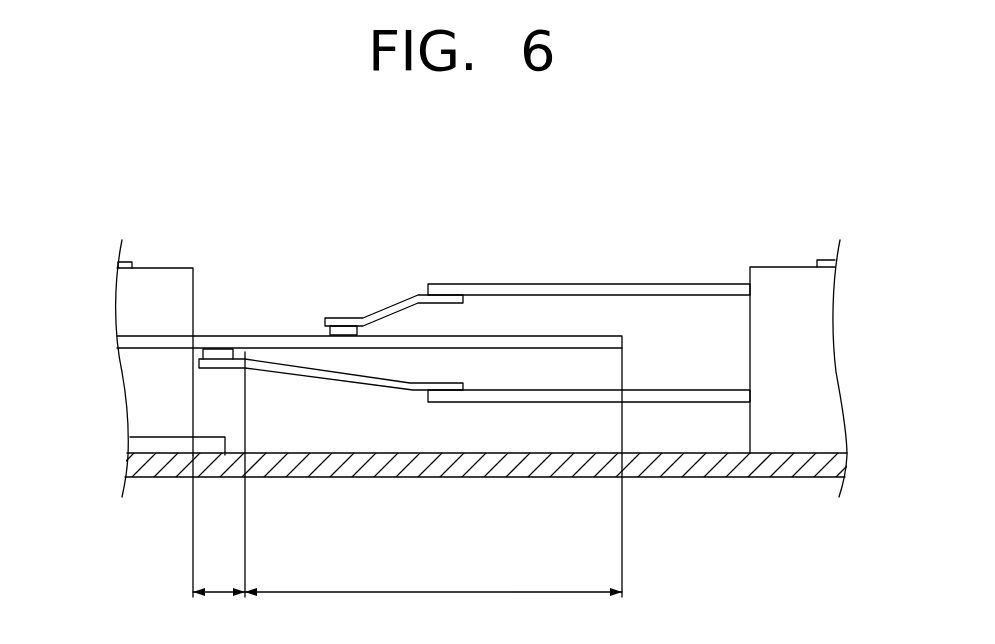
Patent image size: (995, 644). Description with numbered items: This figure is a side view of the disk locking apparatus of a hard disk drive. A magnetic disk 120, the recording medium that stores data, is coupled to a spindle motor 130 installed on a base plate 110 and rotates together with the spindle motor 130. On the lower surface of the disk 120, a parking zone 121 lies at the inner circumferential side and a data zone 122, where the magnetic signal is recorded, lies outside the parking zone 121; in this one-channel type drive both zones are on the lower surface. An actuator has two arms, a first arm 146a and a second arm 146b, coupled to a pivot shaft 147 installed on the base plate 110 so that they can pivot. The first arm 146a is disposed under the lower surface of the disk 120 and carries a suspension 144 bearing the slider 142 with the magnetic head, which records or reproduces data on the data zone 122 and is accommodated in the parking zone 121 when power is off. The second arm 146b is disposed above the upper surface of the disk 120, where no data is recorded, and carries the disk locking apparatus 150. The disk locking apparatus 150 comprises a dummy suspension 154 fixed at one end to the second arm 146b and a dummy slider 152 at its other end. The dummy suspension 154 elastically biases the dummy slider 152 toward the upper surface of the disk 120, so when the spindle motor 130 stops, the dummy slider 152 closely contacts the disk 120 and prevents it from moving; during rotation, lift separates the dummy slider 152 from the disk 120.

The base plate 110 is at (405, 467).
The magnetic disk 120 is at (398, 340).
The parking zone 121 is at (219, 474).
The data zone 122 is at (433, 472).
The spindle motor 130 is at (162, 280).
The slider 142 is at (203, 352).
The suspension 144 is at (335, 377).
The first arm 146a is at (558, 402).
The second arm 146b is at (560, 284).
The pivot shaft 147 is at (823, 260).
The disk locking apparatus 150 is at (365, 262).
The dummy slider 152 is at (335, 327).
The dummy suspension 154 is at (373, 313).